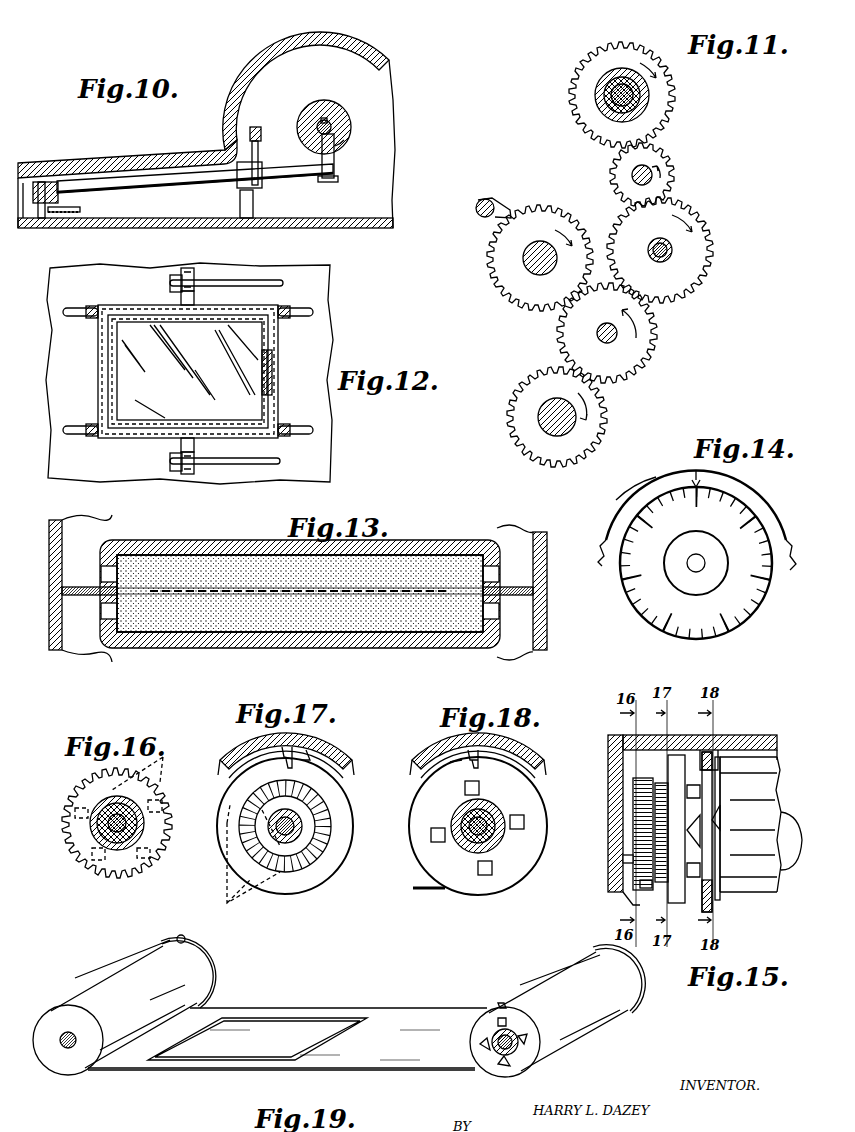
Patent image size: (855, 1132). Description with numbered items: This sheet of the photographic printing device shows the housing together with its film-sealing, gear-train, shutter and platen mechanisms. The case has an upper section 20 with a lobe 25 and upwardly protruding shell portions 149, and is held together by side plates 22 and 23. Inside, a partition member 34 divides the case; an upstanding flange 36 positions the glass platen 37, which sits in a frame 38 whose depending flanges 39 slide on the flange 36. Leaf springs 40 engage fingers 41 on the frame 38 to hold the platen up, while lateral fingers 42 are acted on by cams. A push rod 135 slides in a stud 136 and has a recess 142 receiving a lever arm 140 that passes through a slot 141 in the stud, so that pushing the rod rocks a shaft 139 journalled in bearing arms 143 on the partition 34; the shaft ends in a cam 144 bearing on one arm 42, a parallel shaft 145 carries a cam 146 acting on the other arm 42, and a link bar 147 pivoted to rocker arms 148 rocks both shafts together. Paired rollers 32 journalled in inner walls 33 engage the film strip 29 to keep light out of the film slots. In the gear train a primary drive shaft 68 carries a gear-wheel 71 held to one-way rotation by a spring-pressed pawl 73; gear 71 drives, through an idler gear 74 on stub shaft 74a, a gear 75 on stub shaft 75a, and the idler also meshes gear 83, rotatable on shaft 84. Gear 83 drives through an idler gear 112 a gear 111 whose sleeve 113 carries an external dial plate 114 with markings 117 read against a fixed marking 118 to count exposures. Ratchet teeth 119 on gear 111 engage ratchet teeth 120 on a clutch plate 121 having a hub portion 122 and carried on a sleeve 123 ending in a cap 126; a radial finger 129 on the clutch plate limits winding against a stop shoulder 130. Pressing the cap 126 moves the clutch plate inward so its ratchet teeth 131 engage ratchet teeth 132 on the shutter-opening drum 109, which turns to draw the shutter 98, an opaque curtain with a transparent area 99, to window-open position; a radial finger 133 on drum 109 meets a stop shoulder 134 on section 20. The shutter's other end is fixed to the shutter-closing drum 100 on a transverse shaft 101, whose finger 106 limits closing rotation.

In FIG. 10, the upper section 20 is at (238, 72).
In FIG. 14, the upper section 20 is at (775, 506).
In FIG. 17, the upper section 20 is at (346, 770).
In FIG. 18, the upper section 20 is at (536, 770).
In FIG. 15, the upper section 20 is at (756, 740).
In FIG. 13, the side plate 22 is at (55, 565).
In FIG. 15, the side plate 22 is at (616, 812).
In FIG. 13, the side plate 23 is at (548, 580).
In FIG. 10, the lobe 25 is at (309, 32).
In FIG. 14, the lobe 25 is at (645, 490).
In FIG. 13, the film strip 29 is at (210, 600).
In FIG. 13, the inter-engaging rollers 32 is at (222, 578).
In FIG. 13, the inner walls 33 is at (445, 554).
In FIG. 10, the partition member 34 is at (133, 228).
In FIG. 12, the partition member 34 is at (320, 349).
In FIG. 12, the upstanding flange 36 is at (275, 371).
In FIG. 12, the glass platen 37 is at (148, 400).
In FIG. 12, the frame 38 is at (115, 434).
In FIG. 10, the depending flanges 39 is at (188, 181).
In FIG. 12, the depending flanges 39 is at (275, 389).
In FIG. 12, the leaf springs 40 is at (78, 307).
In FIG. 12, the fingers 41 is at (90, 424).
In FIG. 10, the fingers 42 is at (73, 212).
In FIG. 12, the fingers 42 is at (194, 298).
In FIG. 11, the primary drive shaft 68 is at (530, 272).
In FIG. 11, the gear-wheel 71 is at (500, 258).
In FIG. 11, the spring-pressed pawl 73 is at (504, 197).
In FIG. 11, the idler gear 74 is at (640, 345).
In FIG. 11, the stub shaft 74a is at (597, 334).
In FIG. 11, the gear 75 is at (602, 419).
In FIG. 11, the stub shaft 75a is at (538, 420).
In FIG. 11, the gear 83 is at (696, 250).
In FIG. 11, the shaft 84 is at (670, 257).
In FIG. 18, the shutter 98 is at (424, 890).
In FIG. 19, the shutter 98 is at (421, 1030).
In FIG. 19, the light-transmitting opening 99 is at (295, 1030).
In FIG. 19, the shutter-closing drum 100 is at (120, 993).
In FIG. 19, the transverse shaft 101 is at (64, 1048).
In FIG. 19, the radially projecting finger 106 is at (177, 939).
In FIG. 18, the shutter-opening drum 109 is at (530, 860).
In FIG. 15, the shutter-opening drum 109 is at (750, 878).
In FIG. 19, the shutter-opening drum 109 is at (585, 1017).
In FIG. 11, the gear 111 is at (660, 90).
In FIG. 16, the gear 111 is at (125, 856).
In FIG. 15, the gear 111 is at (640, 836).
In FIG. 11, the idler gear 112 is at (666, 173).
In FIG. 11, the axial sleeve 113 is at (605, 78).
In FIG. 16, the axial sleeve 113 is at (95, 810).
In FIG. 14, the dial plate 114 is at (641, 620).
In FIG. 14, the calibrations 117 is at (752, 614).
In FIG. 14, the fixed marking 118 is at (693, 475).
In FIG. 16, the ratchet teeth 119 is at (163, 766).
In FIG. 15, the ratchet teeth 119 is at (656, 882).
In FIG. 17, the ratchet teeth 120 is at (300, 866).
In FIG. 15, the ratchet teeth 120 is at (660, 788).
In FIG. 17, the clutch plate 121 is at (336, 800).
In FIG. 15, the clutch plate 121 is at (678, 770).
In FIG. 18, the hub portion 122 is at (468, 850).
In FIG. 19, the hub portion 122 is at (504, 1056).
In FIG. 11, the sleeve 123 is at (608, 90).
In FIG. 16, the sleeve 123 is at (92, 823).
In FIG. 17, the sleeve 123 is at (304, 823).
In FIG. 18, the sleeve 123 is at (452, 840).
In FIG. 19, the sleeve 123 is at (496, 1052).
In FIG. 14, the cap 126 is at (674, 570).
In FIG. 17, the radial finger 129 is at (320, 750).
In FIG. 17, the stop shoulder 130 is at (246, 743).
In FIG. 17, the ratchet teeth 131 is at (248, 864).
In FIG. 15, the ratchet teeth 131 is at (692, 872).
In FIG. 18, the ratchet teeth 132 is at (517, 829).
In FIG. 15, the ratchet teeth 132 is at (712, 864).
In FIG. 19, the ratchet teeth 132 is at (510, 1064).
In FIG. 18, the radial finger 133 is at (468, 752).
In FIG. 19, the radial finger 133 is at (501, 1003).
In FIG. 18, the stop shoulder 134 is at (512, 750).
In FIG. 10, the push rod 135 is at (332, 128).
In FIG. 11, the push rod 135 is at (614, 99).
In FIG. 14, the push rod 135 is at (696, 555).
In FIG. 16, the push rod 135 is at (100, 836).
In FIG. 10, the stud 136 is at (336, 114).
In FIG. 12, the shaft 139 is at (262, 282).
In FIG. 10, the lever arm 140 is at (345, 146).
In FIG. 10, the slot 141 is at (335, 156).
In FIG. 10, the recess 142 is at (323, 118).
In FIG. 10, the bearing arms 143 is at (253, 204).
In FIG. 10, the cam 144 is at (70, 180).
In FIG. 12, the cam 144 is at (197, 276).
In FIG. 12, the shaft 145 is at (245, 465).
In FIG. 12, the cam 146 is at (194, 452).
In FIG. 10, the link bar 147 is at (258, 127).
In FIG. 10, the rocker arms 148 is at (258, 153).
In FIG. 10, the shell portions 149 is at (150, 163).